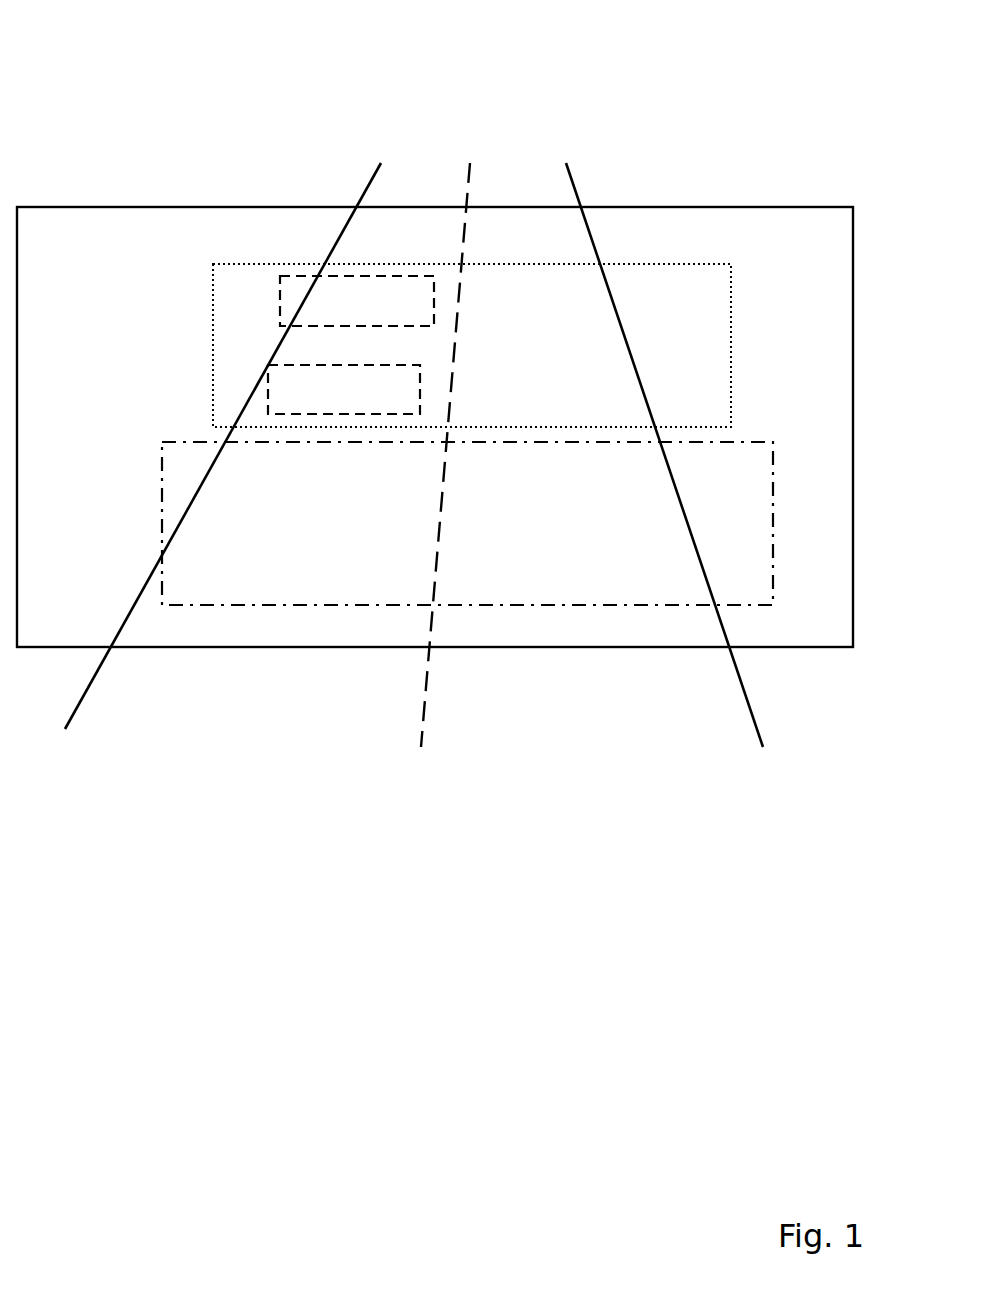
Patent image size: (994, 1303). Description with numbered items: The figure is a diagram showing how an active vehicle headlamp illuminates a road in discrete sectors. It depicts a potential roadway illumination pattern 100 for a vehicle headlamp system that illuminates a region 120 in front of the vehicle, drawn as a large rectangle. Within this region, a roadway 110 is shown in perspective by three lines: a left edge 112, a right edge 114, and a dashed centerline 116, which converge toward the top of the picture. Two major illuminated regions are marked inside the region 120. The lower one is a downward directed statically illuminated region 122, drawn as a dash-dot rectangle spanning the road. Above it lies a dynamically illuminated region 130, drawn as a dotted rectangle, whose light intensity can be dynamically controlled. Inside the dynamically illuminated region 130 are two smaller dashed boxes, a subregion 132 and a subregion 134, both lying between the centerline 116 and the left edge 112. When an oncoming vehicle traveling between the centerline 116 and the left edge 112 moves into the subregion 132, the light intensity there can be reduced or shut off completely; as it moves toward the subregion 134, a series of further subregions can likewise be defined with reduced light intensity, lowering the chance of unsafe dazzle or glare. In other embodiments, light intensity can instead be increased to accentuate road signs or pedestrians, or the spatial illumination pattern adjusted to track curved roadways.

The roadway illumination pattern 100 is at (700, 79).
The roadway 110 is at (232, 731).
The left edge 112 is at (96, 679).
The right edge 114 is at (752, 685).
The centerline 116 is at (428, 682).
The region 120 is at (745, 200).
The statically illuminated region 122 is at (153, 459).
The dynamically illuminated region 130 is at (207, 310).
The subregion 132 is at (379, 318).
The subregion 134 is at (364, 407).